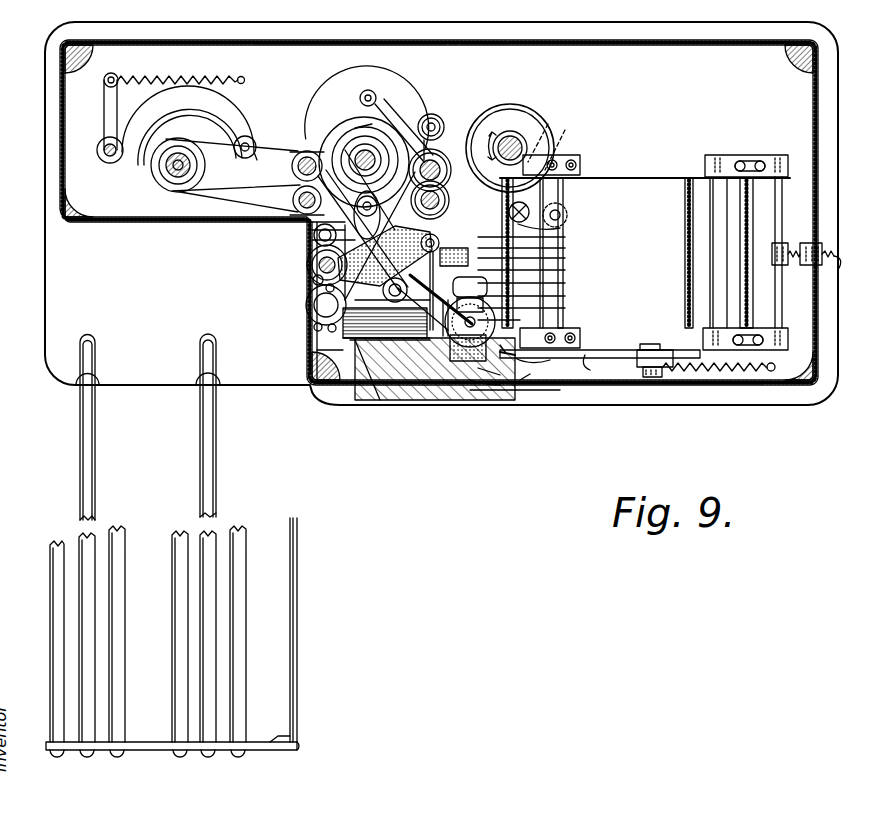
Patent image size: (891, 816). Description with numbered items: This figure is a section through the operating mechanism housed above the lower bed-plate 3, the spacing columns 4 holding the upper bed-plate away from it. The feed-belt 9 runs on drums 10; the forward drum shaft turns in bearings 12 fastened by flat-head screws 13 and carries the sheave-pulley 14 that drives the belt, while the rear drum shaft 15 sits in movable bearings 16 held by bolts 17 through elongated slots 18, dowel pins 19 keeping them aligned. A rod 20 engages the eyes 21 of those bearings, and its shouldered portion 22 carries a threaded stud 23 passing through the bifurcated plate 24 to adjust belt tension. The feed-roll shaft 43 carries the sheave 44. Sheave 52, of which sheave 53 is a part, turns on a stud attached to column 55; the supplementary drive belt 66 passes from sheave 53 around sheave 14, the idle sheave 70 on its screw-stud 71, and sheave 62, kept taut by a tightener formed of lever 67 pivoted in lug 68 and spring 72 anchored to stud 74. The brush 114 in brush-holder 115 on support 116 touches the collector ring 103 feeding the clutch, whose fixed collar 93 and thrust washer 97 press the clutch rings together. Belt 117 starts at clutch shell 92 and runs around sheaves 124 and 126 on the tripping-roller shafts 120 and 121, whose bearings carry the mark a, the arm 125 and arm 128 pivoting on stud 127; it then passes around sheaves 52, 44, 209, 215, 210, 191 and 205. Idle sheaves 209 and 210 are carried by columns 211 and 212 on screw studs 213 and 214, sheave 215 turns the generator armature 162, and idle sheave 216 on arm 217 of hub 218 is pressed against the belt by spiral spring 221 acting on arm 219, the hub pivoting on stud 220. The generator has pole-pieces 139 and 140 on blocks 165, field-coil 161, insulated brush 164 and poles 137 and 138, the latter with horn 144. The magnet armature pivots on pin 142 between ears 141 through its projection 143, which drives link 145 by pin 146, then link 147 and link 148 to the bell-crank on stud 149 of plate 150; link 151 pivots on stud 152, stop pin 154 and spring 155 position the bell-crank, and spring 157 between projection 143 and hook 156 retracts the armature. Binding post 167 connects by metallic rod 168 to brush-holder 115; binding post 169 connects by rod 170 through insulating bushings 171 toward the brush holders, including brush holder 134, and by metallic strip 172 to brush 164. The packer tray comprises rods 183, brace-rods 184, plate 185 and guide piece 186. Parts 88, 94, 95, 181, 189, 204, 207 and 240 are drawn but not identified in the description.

The casing 3 is at (441, 213).
The corner posts 4 is at (93, 60).
The frame plate 9 is at (630, 190).
The frame 10 is at (590, 253).
The bracket 12 is at (572, 158).
The bracket screws 13 is at (577, 165).
The frame member 14 is at (540, 357).
The frame bar 15 is at (712, 232).
The bracket 16 is at (740, 160).
The screw 17 is at (762, 164).
The slot 18 is at (748, 162).
The bar 19 is at (735, 326).
The rod 20 is at (782, 215).
The bracket end 21 is at (788, 166).
The block 22 is at (788, 246).
The block 23 is at (823, 262).
The spring connector 24 is at (830, 252).
The hub 43 is at (521, 145).
The link 44 is at (543, 135).
The pin 52 is at (530, 205).
The block 53 is at (457, 248).
The link 55 is at (562, 141).
The lever 62 is at (590, 360).
The bar 66 is at (566, 238).
The stop block 67 is at (653, 378).
The link 68 is at (528, 360).
The plate 70 is at (672, 356).
The lug 71 is at (653, 342).
The spring 72 is at (710, 370).
The spring anchor 74 is at (771, 371).
The hub 88 is at (355, 152).
The rod 92 is at (305, 225).
The rod 93 is at (320, 148).
The pin 94 is at (316, 240).
The collar 95 is at (316, 243).
The disc 97 is at (360, 150).
The cam disc 103 is at (367, 150).
The belt 114 is at (232, 161).
The pulley hub 115 is at (297, 206).
The bar 116 is at (312, 232).
The belt 117 is at (296, 170).
The pulley 120 is at (446, 196).
The wheel 121 is at (520, 150).
The pulley 124 is at (410, 160).
The pulley 125 is at (434, 119).
The arm 126 is at (420, 132).
The pivot 127 is at (372, 90).
The cam rim 128 is at (328, 118).
The link 134 is at (440, 118).
The wire 137 is at (566, 296).
The lever 138 is at (455, 395).
The wire 139 is at (566, 283).
The bar 140 is at (522, 382).
The bar 141 is at (356, 345).
The bar 142 is at (360, 360).
The plate 143 is at (385, 256).
The plate 144 is at (370, 400).
The block 145 is at (316, 380).
The rod 146 is at (360, 385).
The ring 147 is at (308, 330).
The lever 148 is at (438, 252).
The pin 149 is at (440, 240).
The pulley 150 is at (312, 268).
The bar 151 is at (343, 336).
The ring 152 is at (310, 280).
The ring 154 is at (448, 188).
The rod 155 is at (440, 226).
The wire 156 is at (566, 270).
The wire 157 is at (566, 258).
The bar 161 is at (318, 374).
The wire 162 is at (560, 326).
The link 164 is at (540, 382).
The bar 165 is at (310, 228).
The pivot link 167 is at (355, 230).
The wire 168 is at (566, 308).
The drum 169 is at (455, 345).
The rod 170 is at (400, 345).
The roller 171 is at (385, 305).
The lever 172 is at (470, 370).
The grid 181 is at (343, 320).
The tubes 183 is at (52, 659).
The tubes 184 is at (566, 248).
The base plate 185 is at (255, 750).
The end plate 186 is at (420, 350).
The pulley 189 is at (173, 183).
The pulley rim 191 is at (163, 170).
The pulley 204 is at (292, 167).
The pulley hub 205 is at (297, 172).
The pulley 207 is at (293, 200).
The disc 209 is at (566, 207).
The frame plate 210 is at (316, 350).
The link 211 is at (562, 224).
The pin 212 is at (330, 332).
The pin 213 is at (566, 214).
The pin 214 is at (314, 328).
The link 215 is at (508, 357).
The band 216 is at (197, 137).
The arc 217 is at (189, 123).
The pivot 218 is at (110, 163).
The lever 219 is at (112, 107).
The pivot 220 is at (104, 155).
The spring 221 is at (188, 79).
The pin 240 is at (318, 290).
The direction arrow a is at (505, 106).